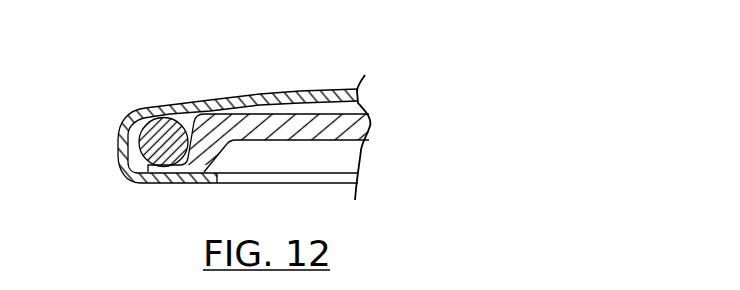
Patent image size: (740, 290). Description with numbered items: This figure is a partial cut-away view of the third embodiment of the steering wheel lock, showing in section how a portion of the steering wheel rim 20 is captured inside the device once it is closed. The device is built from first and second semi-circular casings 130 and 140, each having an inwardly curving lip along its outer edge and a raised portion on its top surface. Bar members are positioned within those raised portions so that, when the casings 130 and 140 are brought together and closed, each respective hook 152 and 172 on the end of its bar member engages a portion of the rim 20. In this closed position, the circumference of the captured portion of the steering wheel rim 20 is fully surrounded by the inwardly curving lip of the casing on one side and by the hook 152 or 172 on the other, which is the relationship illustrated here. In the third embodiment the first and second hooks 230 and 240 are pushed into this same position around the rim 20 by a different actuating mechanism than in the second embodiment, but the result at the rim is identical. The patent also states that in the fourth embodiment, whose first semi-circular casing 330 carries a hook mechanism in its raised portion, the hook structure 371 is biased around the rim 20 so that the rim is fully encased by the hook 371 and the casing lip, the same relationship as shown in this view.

The steering wheel rim 20 is at (110, 131).
The first semi-circular casing 130 is at (238, 97).
The second semi-circular casing 140 is at (238, 97).
The first semi-circular casing 330 is at (245, 93).
The hook 152 is at (432, 181).
The hook 172 is at (401, 181).
The first hook 230 is at (365, 181).
The second hook 240 is at (330, 181).
The hook structure 371 is at (217, 150).